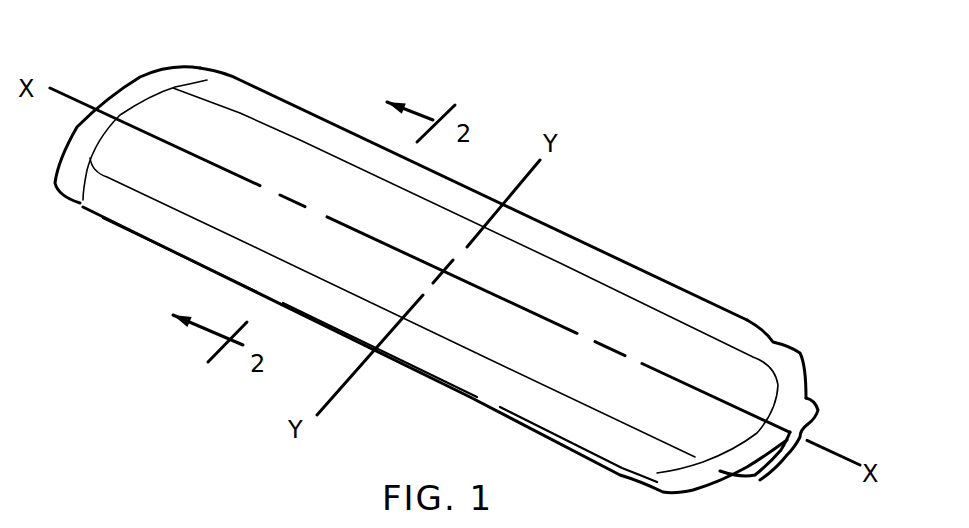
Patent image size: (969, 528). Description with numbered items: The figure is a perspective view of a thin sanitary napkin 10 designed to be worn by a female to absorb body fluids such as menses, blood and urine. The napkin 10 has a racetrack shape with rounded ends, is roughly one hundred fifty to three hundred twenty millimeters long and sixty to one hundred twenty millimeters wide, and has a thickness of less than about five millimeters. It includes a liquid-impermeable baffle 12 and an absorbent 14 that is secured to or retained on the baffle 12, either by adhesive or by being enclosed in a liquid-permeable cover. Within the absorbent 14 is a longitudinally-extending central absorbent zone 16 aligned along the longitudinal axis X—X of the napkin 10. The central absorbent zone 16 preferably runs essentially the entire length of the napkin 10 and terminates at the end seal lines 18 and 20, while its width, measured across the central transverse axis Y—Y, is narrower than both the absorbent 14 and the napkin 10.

The sanitary napkin 10 is at (459, 254).
The liquid-impermeable baffle 12 is at (803, 359).
The absorbent 14 is at (588, 253).
The central absorbent zone 16 is at (803, 437).
The end seal line 18 is at (188, 62).
The end seal line 20 is at (770, 340).